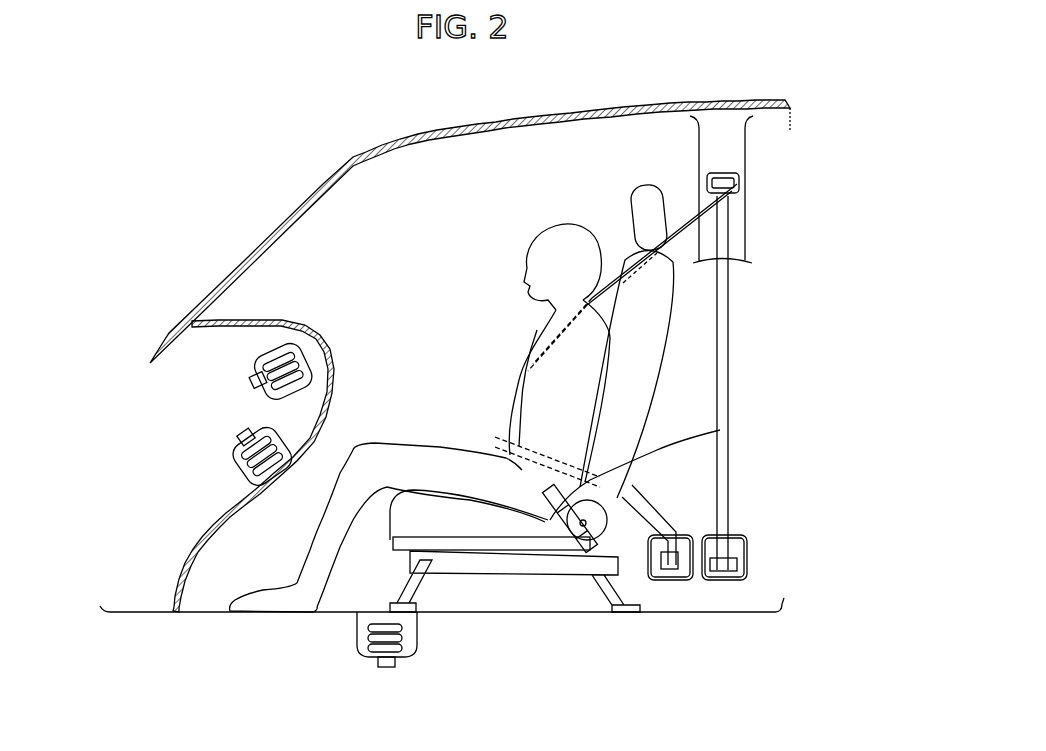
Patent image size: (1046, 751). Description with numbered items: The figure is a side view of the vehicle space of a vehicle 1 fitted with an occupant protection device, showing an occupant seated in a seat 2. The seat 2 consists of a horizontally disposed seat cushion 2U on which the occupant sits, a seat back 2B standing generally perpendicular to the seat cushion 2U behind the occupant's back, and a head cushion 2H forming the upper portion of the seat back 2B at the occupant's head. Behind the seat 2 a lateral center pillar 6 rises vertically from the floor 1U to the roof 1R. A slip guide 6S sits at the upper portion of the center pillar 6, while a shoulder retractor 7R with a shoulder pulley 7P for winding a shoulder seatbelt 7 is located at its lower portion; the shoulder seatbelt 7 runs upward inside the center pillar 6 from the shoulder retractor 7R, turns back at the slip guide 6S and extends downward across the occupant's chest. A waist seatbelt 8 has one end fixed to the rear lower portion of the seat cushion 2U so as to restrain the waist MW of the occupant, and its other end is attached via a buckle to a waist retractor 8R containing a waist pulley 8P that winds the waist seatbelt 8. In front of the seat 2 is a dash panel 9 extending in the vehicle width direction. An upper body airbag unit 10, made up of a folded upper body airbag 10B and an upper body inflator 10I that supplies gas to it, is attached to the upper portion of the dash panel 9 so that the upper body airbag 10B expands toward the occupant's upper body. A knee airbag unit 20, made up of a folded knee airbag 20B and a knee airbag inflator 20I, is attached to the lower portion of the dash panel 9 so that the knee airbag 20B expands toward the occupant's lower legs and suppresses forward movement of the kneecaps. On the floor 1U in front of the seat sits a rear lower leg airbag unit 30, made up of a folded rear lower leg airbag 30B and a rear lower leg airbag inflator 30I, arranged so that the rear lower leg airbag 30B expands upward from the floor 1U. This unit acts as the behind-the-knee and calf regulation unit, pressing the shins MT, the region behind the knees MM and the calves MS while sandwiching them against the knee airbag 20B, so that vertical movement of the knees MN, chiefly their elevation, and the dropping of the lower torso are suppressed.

The vehicle 1 is at (552, 101).
The roof 1R is at (657, 107).
The floor 1U is at (516, 614).
The seat 2 is at (800, 283).
The head cushion 2H is at (693, 262).
The seat back 2B is at (643, 340).
The seat cushion 2U is at (720, 430).
The center pillar 6 is at (722, 152).
The slip guide 6S is at (742, 186).
The shoulder seatbelt 7 is at (517, 378).
The shoulder retractor 7R is at (749, 545).
The shoulder pulley 7P is at (749, 566).
The waist seatbelt 8 is at (520, 452).
The waist retractor 8R is at (667, 535).
The waist pulley 8P is at (668, 580).
The dash panel 9 is at (268, 322).
The upper body airbag unit 10 is at (250, 362).
The upper body airbag 10B is at (262, 352).
The upper body inflator 10I is at (258, 382).
The knee airbag unit 20 is at (230, 457).
The knee airbag 20B is at (268, 433).
The knee airbag inflator 20I is at (245, 435).
The rear lower leg airbag unit 30 is at (352, 642).
The rear lower leg airbag 30B is at (418, 642).
The rear lower leg airbag inflator 30I is at (395, 666).
The knee of occupant MN is at (358, 448).
The shins MT is at (317, 528).
The calves MS is at (353, 538).
The behind the knees MM is at (420, 488).
The waist MW is at (504, 456).